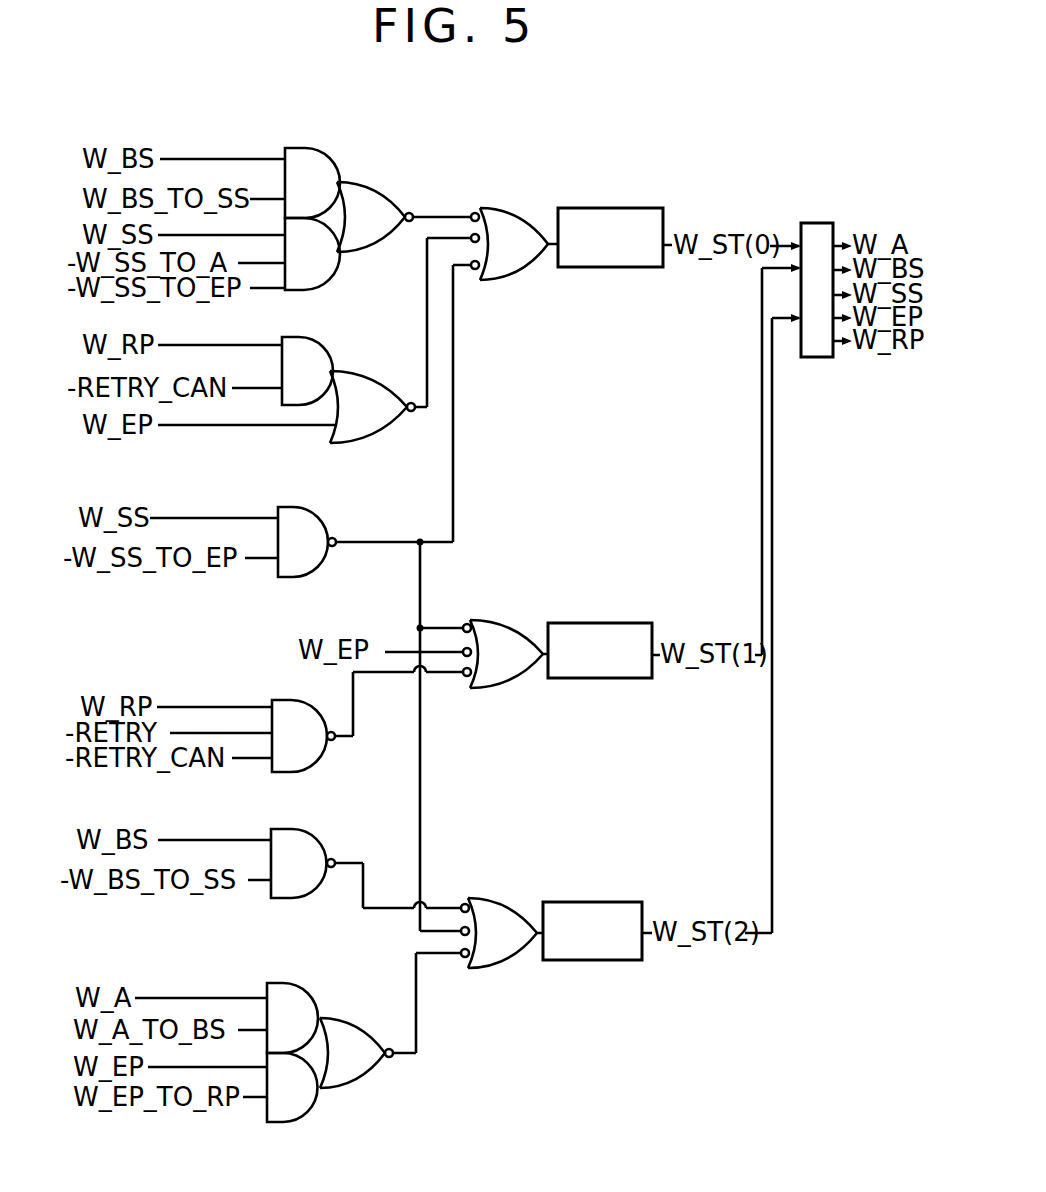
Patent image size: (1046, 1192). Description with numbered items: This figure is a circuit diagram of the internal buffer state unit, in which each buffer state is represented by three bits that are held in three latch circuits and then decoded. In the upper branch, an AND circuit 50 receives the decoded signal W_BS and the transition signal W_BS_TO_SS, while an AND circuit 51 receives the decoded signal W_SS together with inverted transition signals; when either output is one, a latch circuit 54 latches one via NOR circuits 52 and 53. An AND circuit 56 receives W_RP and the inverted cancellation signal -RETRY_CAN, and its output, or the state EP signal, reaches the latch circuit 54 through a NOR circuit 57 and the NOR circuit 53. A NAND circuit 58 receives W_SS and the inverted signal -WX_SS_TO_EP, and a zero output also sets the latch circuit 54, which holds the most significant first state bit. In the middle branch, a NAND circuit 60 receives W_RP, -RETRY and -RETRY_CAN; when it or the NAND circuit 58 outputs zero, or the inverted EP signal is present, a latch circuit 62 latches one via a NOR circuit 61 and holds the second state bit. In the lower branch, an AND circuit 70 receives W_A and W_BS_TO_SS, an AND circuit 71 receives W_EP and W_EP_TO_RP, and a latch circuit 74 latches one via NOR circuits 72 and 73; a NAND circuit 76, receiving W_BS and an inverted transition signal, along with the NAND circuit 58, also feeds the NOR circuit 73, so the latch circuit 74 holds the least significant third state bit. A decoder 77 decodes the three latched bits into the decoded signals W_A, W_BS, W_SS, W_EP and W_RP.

The AND circuit 50 is at (324, 149).
The AND circuit 51 is at (334, 289).
The NOR circuit 52 is at (388, 193).
The NOR circuit 53 is at (496, 208).
The latch circuit 54 is at (597, 208).
The AND circuit 56 is at (323, 340).
The NOR circuit 57 is at (361, 372).
The NAND circuit 58 is at (323, 510).
The NAND circuit 60 is at (324, 760).
The NOR circuit 61 is at (495, 618).
The latch circuit 62 is at (605, 623).
The AND circuit 70 is at (302, 985).
The AND circuit 71 is at (318, 1112).
The NOR circuit 72 is at (351, 1018).
The NOR circuit 73 is at (488, 898).
The latch circuit 74 is at (596, 902).
The NAND circuit 76 is at (309, 829).
The decoder 77 is at (809, 223).